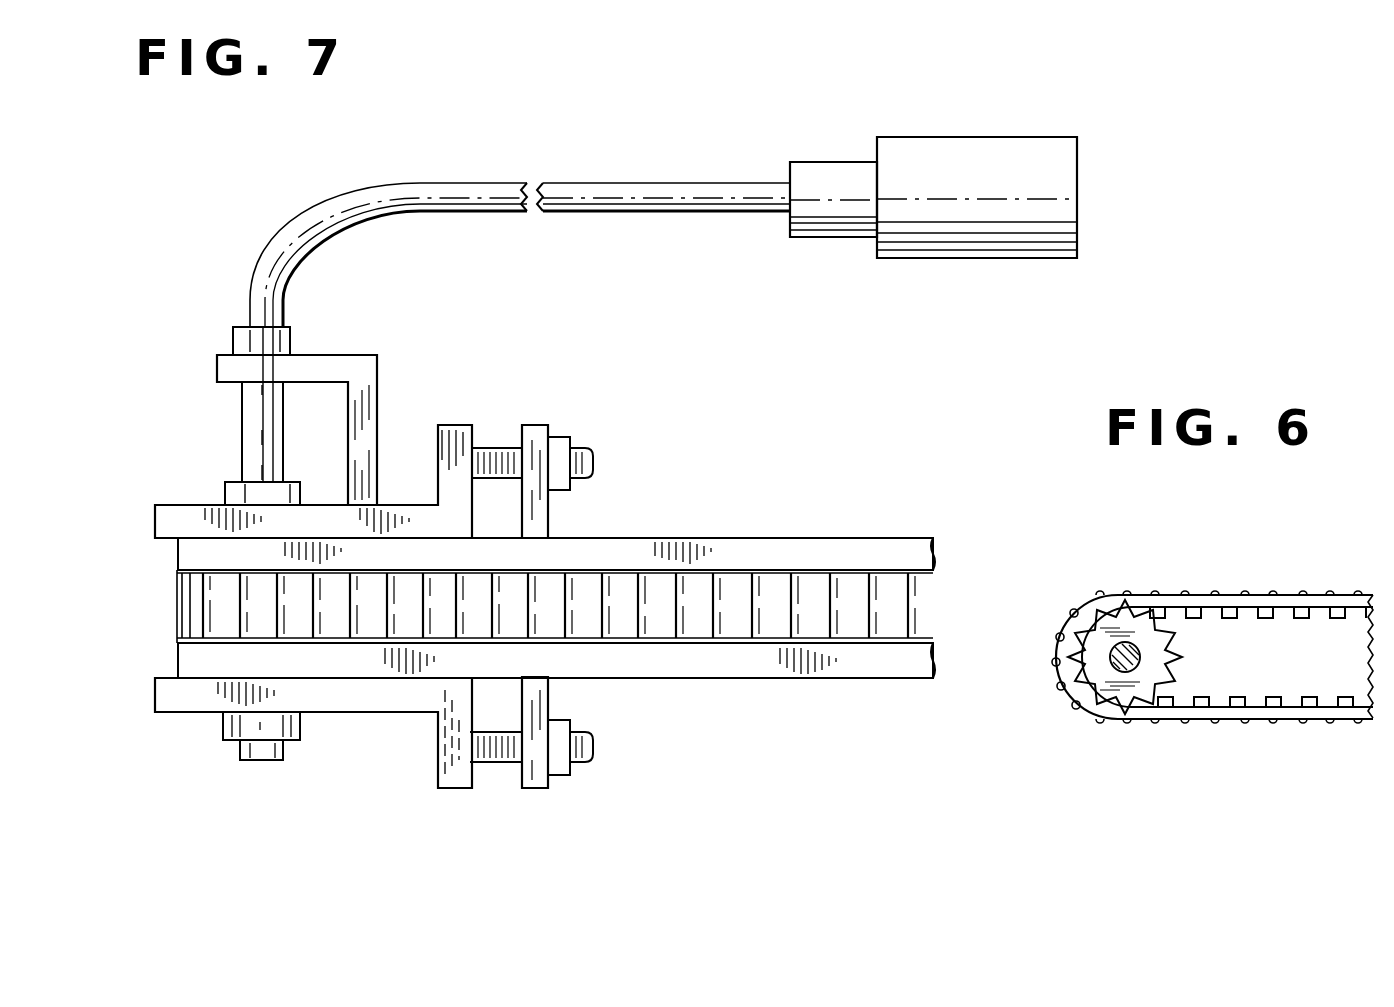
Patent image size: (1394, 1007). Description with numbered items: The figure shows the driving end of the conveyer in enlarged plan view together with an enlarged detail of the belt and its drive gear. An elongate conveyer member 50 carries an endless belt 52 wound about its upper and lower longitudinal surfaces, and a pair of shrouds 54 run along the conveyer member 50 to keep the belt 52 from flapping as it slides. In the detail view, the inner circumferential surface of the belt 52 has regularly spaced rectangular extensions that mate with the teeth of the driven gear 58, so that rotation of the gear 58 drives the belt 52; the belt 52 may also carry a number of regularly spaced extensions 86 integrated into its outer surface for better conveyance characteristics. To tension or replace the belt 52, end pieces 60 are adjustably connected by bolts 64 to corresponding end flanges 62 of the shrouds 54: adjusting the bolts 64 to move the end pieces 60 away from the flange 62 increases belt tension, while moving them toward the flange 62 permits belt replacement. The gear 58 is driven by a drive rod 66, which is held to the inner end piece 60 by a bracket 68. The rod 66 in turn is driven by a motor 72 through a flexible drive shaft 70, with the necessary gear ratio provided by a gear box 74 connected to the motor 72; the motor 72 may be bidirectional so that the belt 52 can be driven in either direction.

In FIG. 7, the elongate conveyer member 50 is at (556, 607).
In FIG. 7, the endless belt 52 is at (732, 623).
In FIG. 6, the endless belt 52 is at (1257, 602).
In FIG. 7, the shrouds 54 is at (822, 548).
In FIG. 7, the driven gear 58 is at (257, 762).
In FIG. 6, the driven gear 58 is at (1127, 690).
In FIG. 7, the end pieces 60 is at (168, 505).
In FIG. 7, the end flanges 62 is at (530, 425).
In FIG. 7, the bolts 64 is at (567, 437).
In FIG. 7, the drive rod 66 is at (243, 430).
In FIG. 7, the bracket 68 is at (347, 352).
In FIG. 7, the flexible drive shaft 70 is at (612, 190).
In FIG. 7, the motor 72 is at (970, 143).
In FIG. 7, the gear box 74 is at (822, 172).
In FIG. 6, the extensions 86 is at (1155, 590).